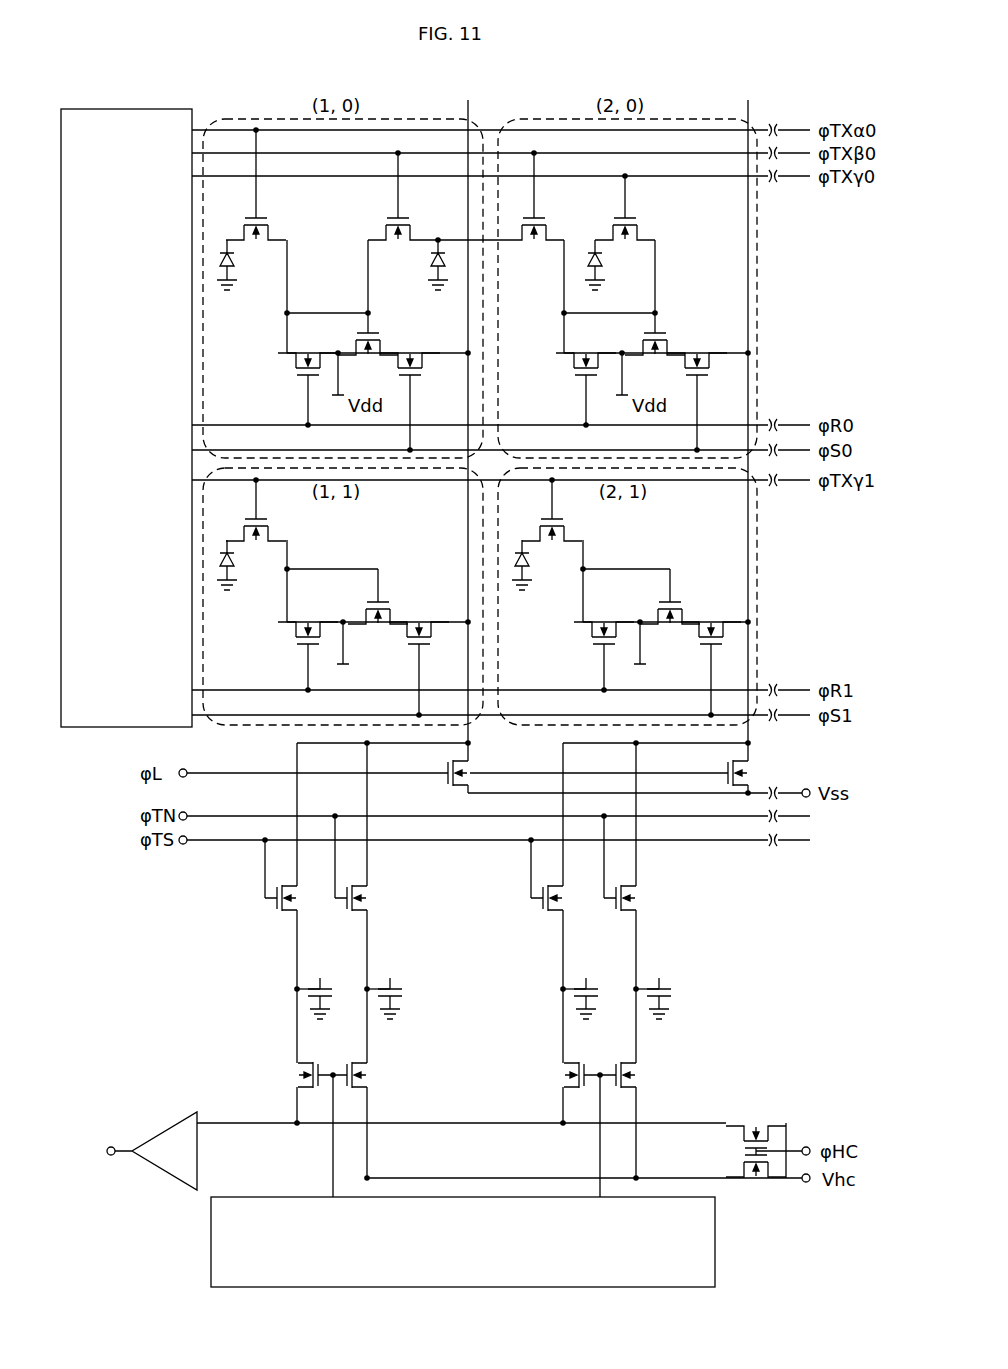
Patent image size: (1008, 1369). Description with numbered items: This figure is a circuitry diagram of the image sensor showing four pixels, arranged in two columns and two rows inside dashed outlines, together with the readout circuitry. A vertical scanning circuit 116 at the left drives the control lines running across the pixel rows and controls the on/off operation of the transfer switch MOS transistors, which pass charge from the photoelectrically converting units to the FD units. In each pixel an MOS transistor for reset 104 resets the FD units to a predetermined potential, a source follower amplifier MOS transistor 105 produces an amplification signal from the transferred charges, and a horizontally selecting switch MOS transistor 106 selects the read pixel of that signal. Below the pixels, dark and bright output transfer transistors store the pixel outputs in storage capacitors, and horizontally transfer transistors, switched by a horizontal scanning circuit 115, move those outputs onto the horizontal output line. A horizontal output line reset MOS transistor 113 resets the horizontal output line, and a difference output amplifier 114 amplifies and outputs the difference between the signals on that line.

The vertical scanning circuit 116 is at (136, 108).
The MOS transistor for reset 104 is at (303, 378).
The source follower amplifier MOS transistor 105 is at (372, 330).
The horizontally selecting switch MOS transistor 106 is at (400, 376).
The horizontal output line reset MOS transistor 113 is at (768, 1152).
The difference output amplifier 114 is at (171, 1170).
The horizontal scanning circuit 115 is at (716, 1250).